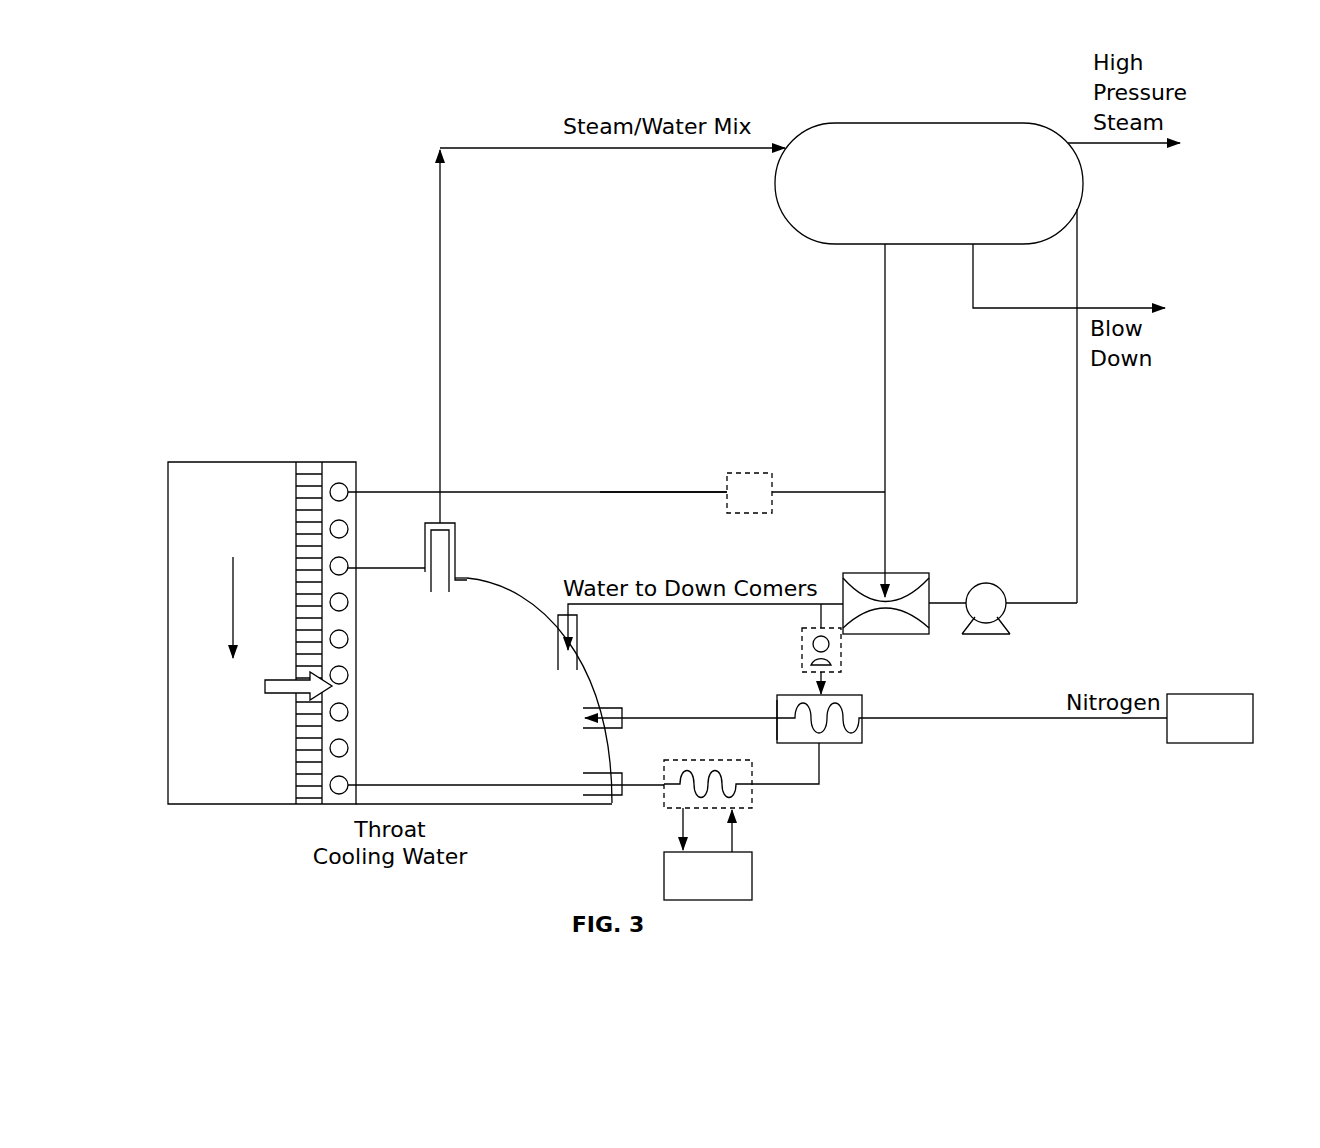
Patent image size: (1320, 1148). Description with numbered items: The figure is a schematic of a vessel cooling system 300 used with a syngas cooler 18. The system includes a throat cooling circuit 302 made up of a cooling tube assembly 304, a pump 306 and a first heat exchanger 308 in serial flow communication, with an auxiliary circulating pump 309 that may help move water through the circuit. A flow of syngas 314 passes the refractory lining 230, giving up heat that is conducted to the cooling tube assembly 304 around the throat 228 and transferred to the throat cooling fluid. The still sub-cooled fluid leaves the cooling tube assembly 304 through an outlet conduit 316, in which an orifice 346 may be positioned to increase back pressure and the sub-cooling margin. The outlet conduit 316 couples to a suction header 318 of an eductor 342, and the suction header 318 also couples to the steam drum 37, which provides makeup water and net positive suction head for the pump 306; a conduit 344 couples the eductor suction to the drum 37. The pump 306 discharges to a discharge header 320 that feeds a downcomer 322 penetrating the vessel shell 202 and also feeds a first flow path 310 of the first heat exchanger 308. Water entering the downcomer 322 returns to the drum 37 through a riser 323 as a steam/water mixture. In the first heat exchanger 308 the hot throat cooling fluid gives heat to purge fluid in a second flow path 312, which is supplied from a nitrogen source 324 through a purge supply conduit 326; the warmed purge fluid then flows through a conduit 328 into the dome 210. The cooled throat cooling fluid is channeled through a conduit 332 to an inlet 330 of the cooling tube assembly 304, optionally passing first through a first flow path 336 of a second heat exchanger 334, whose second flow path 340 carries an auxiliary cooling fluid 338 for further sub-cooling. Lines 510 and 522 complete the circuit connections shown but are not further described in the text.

The syngas cooler 18 is at (362, 358).
The steam drum 37 is at (955, 122).
The vessel shell 202 is at (590, 676).
The dome 210 is at (498, 718).
The throat 228 is at (213, 425).
The refractory lining 230 is at (312, 460).
The vessel cooling system 300 is at (546, 128).
The throat cooling circuit 302 is at (1093, 570).
The cooling tube assembly 304 is at (343, 476).
The pump 306 is at (996, 584).
The first heat exchanger 308 is at (845, 697).
The auxiliary circulating pump 309 is at (843, 640).
The first flow path 310 is at (787, 700).
The second flow path 312 is at (855, 743).
The flow of syngas 314 is at (233, 608).
The outlet conduit 316 is at (565, 492).
The suction header 318 is at (1077, 525).
The discharge header 320 is at (945, 600).
The downcomer 322 is at (580, 640).
The riser 323 is at (454, 523).
The nitrogen source 324 is at (1210, 718).
The purge supply conduit 326 is at (962, 718).
The conduit 328 is at (700, 718).
The inlet 330 is at (350, 780).
The conduit 332 is at (452, 785).
The second heat exchanger 334 is at (760, 804).
The first flow path 336 is at (748, 780).
The auxiliary cooling fluid 338 is at (708, 876).
The second flow path 340 is at (665, 798).
The eductor 342 is at (852, 573).
The conduit 344 is at (885, 306).
The orifice 346 is at (740, 473).
The throat cooling water pipe 510 is at (452, 804).
The riser line 522 is at (440, 312).